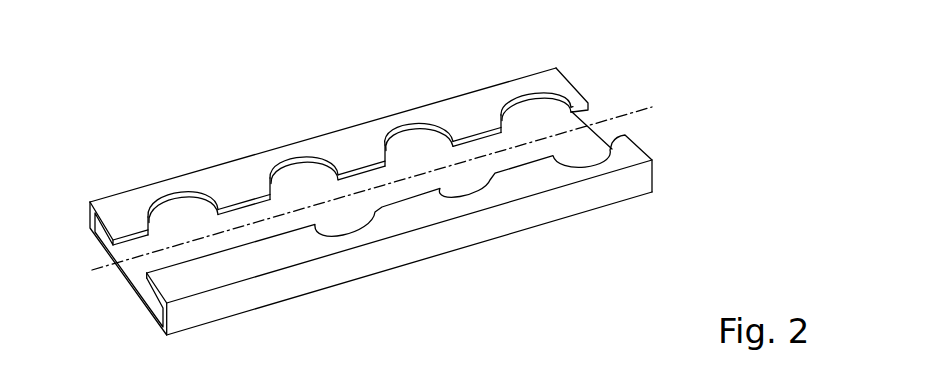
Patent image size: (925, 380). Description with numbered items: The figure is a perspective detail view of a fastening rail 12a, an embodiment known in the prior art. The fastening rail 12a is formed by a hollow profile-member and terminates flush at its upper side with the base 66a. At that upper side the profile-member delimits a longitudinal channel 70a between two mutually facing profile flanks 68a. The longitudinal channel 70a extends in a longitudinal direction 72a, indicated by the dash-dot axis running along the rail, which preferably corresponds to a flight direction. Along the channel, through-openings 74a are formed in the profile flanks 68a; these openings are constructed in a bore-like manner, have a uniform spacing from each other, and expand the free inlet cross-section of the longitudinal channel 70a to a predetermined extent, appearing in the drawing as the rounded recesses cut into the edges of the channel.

The fastening rail 12a is at (302, 126).
The base 66a is at (258, 135).
The profile flanks 68a is at (358, 168).
The longitudinal channel 70a is at (421, 152).
The longitudinal direction 72a is at (638, 108).
The through-openings 74a is at (597, 163).